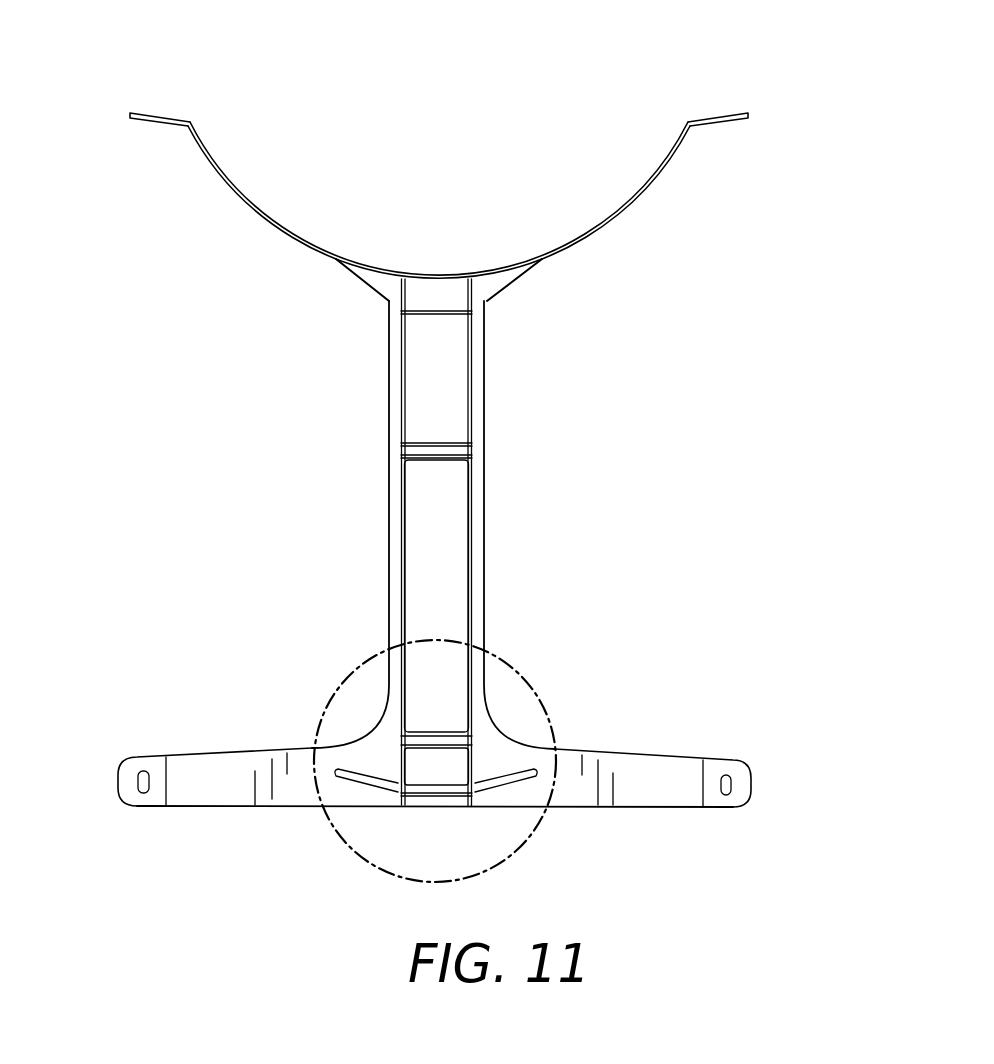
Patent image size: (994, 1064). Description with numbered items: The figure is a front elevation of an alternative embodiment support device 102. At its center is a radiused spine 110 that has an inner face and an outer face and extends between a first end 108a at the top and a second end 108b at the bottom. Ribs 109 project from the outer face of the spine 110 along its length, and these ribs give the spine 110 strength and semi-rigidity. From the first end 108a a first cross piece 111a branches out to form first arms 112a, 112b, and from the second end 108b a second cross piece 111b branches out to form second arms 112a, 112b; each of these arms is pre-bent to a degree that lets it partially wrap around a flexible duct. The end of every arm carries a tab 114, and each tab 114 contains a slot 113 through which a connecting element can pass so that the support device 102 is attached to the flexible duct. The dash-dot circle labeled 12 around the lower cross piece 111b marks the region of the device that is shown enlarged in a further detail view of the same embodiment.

The detail circle for FIG. 12 is at (545, 717).
The support device 102 is at (352, 551).
The first end 108a is at (436, 232).
The second end 108b is at (430, 839).
The ribs 109 is at (388, 393).
The radiused spine 110 is at (462, 388).
The first cross piece 111a is at (630, 237).
The second cross piece 111b is at (221, 828).
The first arms 112a is at (608, 218).
The second arms 112b is at (221, 166).
The slot 113 is at (145, 768).
The tab 114 is at (153, 113).